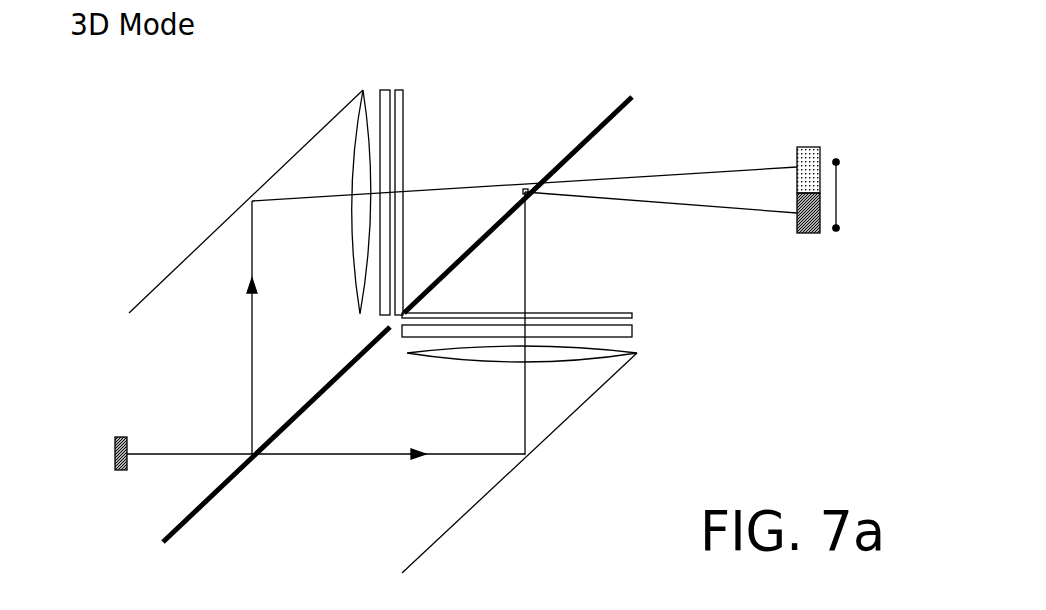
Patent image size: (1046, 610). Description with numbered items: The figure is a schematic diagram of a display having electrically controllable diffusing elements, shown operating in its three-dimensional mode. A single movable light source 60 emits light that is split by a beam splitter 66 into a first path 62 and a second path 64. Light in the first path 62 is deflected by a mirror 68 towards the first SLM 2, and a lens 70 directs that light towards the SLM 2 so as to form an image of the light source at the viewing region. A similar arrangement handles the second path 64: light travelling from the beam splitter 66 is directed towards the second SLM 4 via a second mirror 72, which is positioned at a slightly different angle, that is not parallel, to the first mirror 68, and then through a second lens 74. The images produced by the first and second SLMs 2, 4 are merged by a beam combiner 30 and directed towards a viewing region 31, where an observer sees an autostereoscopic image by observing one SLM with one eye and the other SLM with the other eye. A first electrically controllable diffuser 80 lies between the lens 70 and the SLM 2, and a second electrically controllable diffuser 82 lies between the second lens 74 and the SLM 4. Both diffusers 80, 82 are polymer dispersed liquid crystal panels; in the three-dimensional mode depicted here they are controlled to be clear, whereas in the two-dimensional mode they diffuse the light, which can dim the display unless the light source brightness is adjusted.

The first SLM 2 is at (626, 303).
The second SLM 4 is at (402, 88).
The beam combiner 30 is at (601, 117).
The viewing region 31 is at (803, 145).
The movable light source 60 is at (110, 455).
The first path 62 is at (345, 457).
The second path 64 is at (246, 340).
The beam splitter 66 is at (210, 508).
The mirror 68 is at (502, 482).
The lens 70 is at (622, 363).
The second mirror 72 is at (213, 232).
The second lens 74 is at (355, 108).
The first electrically controllable diffuser 80 is at (634, 330).
The second electrically controllable diffuser 82 is at (383, 88).